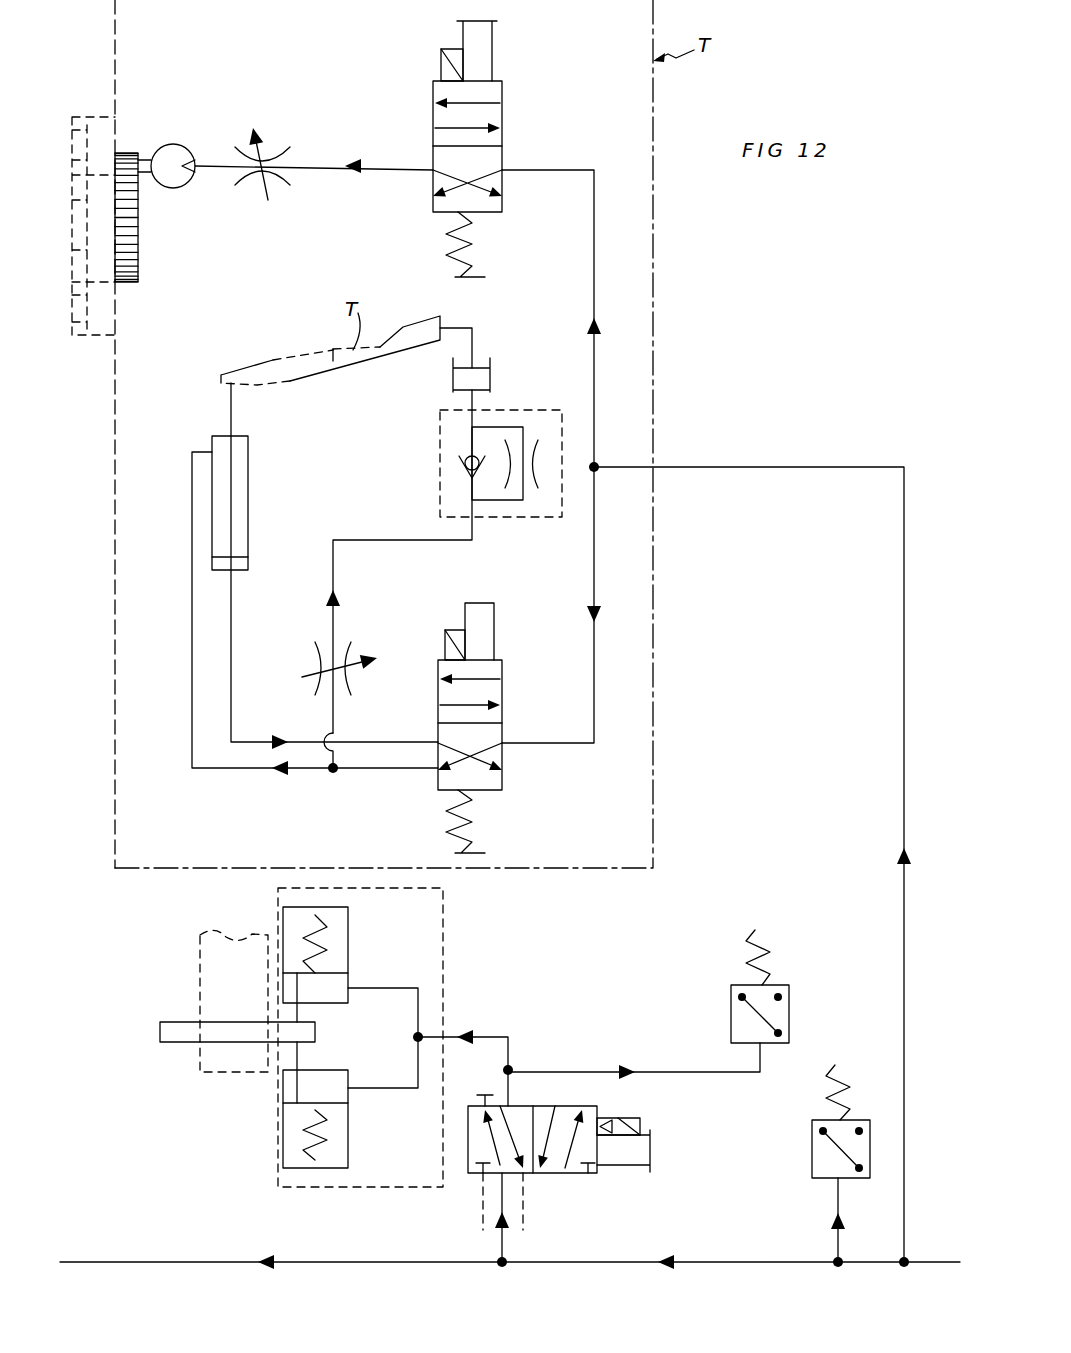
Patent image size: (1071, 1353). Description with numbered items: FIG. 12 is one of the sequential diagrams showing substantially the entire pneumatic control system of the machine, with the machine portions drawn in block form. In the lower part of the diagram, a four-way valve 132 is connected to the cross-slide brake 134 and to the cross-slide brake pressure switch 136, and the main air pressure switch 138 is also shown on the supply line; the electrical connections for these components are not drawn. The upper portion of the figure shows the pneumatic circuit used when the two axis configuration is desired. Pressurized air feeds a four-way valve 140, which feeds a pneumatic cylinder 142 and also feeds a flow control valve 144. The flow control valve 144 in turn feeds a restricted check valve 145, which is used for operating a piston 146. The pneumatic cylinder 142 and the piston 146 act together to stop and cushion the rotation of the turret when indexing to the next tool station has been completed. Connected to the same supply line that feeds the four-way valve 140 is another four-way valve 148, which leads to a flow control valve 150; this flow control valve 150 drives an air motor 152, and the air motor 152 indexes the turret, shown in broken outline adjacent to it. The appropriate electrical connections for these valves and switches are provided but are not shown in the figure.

The four-way valve 132 is at (598, 1182).
The cross-slide brake 134 is at (445, 979).
The cross-slide brake pressure switch 136 is at (790, 997).
The main air pressure switch 138 is at (812, 1160).
The four-way valve 140 is at (503, 691).
The pneumatic cylinder 142 is at (238, 514).
The flow control valve 144 is at (353, 662).
The restricted check valve 145 is at (552, 436).
The piston 146 is at (482, 381).
The four-way valve 148 is at (503, 113).
The flow control valve 150 is at (272, 148).
The air motor 152 is at (172, 143).